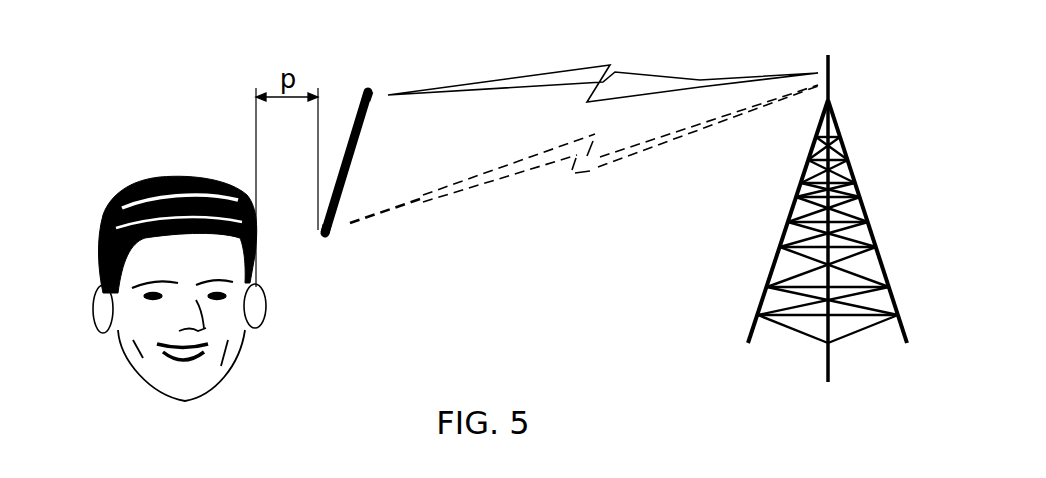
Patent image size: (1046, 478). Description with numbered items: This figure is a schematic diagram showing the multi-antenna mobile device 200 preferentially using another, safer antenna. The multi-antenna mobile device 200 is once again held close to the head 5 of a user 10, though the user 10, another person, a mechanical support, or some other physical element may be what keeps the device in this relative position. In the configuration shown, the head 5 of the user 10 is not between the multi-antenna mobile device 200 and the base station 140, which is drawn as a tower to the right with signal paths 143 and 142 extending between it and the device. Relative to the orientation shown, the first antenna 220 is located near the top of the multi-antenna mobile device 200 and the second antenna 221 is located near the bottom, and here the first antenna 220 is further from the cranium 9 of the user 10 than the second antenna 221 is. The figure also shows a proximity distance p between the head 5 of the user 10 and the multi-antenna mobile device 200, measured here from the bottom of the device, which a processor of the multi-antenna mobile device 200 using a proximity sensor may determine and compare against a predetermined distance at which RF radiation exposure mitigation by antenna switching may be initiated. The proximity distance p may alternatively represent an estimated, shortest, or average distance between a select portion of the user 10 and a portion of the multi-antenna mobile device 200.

The head 5 is at (212, 383).
The cranium 9 is at (173, 177).
The user 10 is at (300, 322).
The base station 140 is at (762, 315).
The uplink / reflected signal 142 is at (583, 173).
The downlink signal 143 is at (607, 62).
The multi-antenna mobile device 200 is at (355, 172).
The first antenna 220 is at (372, 92).
The second antenna 221 is at (327, 237).